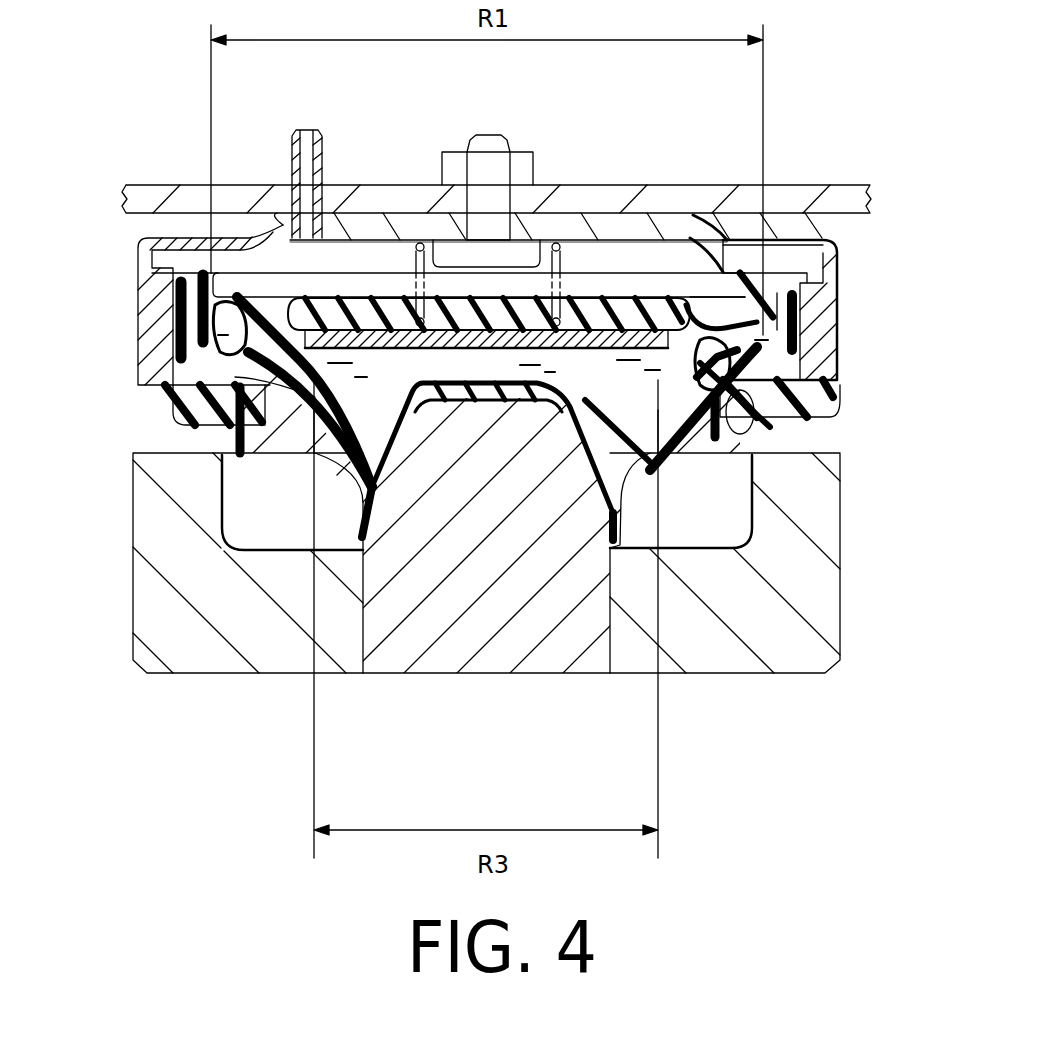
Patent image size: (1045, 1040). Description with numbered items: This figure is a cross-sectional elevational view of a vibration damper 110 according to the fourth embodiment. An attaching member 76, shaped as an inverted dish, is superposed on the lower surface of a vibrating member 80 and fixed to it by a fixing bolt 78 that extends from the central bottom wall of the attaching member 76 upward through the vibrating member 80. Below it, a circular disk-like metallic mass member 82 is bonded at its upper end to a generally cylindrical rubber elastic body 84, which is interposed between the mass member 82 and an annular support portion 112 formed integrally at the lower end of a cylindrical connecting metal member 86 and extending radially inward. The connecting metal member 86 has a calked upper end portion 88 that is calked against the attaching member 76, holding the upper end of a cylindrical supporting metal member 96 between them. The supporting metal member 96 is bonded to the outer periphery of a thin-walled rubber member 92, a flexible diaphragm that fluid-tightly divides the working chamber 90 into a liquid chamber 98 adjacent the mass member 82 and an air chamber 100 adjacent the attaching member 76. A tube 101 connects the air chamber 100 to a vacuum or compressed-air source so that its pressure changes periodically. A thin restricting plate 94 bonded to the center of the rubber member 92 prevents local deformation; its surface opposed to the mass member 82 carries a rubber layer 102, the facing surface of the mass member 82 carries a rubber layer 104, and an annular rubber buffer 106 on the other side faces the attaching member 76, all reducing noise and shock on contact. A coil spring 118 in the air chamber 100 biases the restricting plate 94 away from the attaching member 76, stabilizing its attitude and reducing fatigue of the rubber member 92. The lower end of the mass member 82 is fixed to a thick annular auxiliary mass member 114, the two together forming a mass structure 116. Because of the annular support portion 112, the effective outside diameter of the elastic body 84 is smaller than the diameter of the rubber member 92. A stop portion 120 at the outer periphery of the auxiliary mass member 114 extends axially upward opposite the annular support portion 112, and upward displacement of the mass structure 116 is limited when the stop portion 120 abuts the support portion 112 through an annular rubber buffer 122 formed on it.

The attaching member 76 is at (557, 222).
The fixing bolt 78 is at (487, 200).
The vibrating member 80 is at (187, 200).
The mass member 82 is at (553, 657).
The elastic body 84 is at (622, 455).
The connecting metal member 86 is at (145, 310).
The calked upper end portion 88 is at (822, 250).
The working chamber 90 is at (608, 191).
The rubber member 92 is at (260, 357).
The restricting plate 94 is at (390, 308).
The supporting metal member 96 is at (765, 337).
The liquid chamber 98 is at (741, 327).
The air chamber 100 is at (677, 257).
The tube 101 is at (290, 152).
The rubber layer 102 is at (447, 343).
The rubber layer 104 is at (507, 392).
The rubber buffer 106 is at (362, 306).
The vibration damper 110 is at (855, 325).
The annular support portion 112 is at (253, 437).
The auxiliary mass member 114 is at (705, 657).
The mass structure 116 is at (494, 561).
The coil spring 118 is at (572, 258).
The stop portion 120 is at (175, 488).
The annular rubber buffer 122 is at (790, 410).